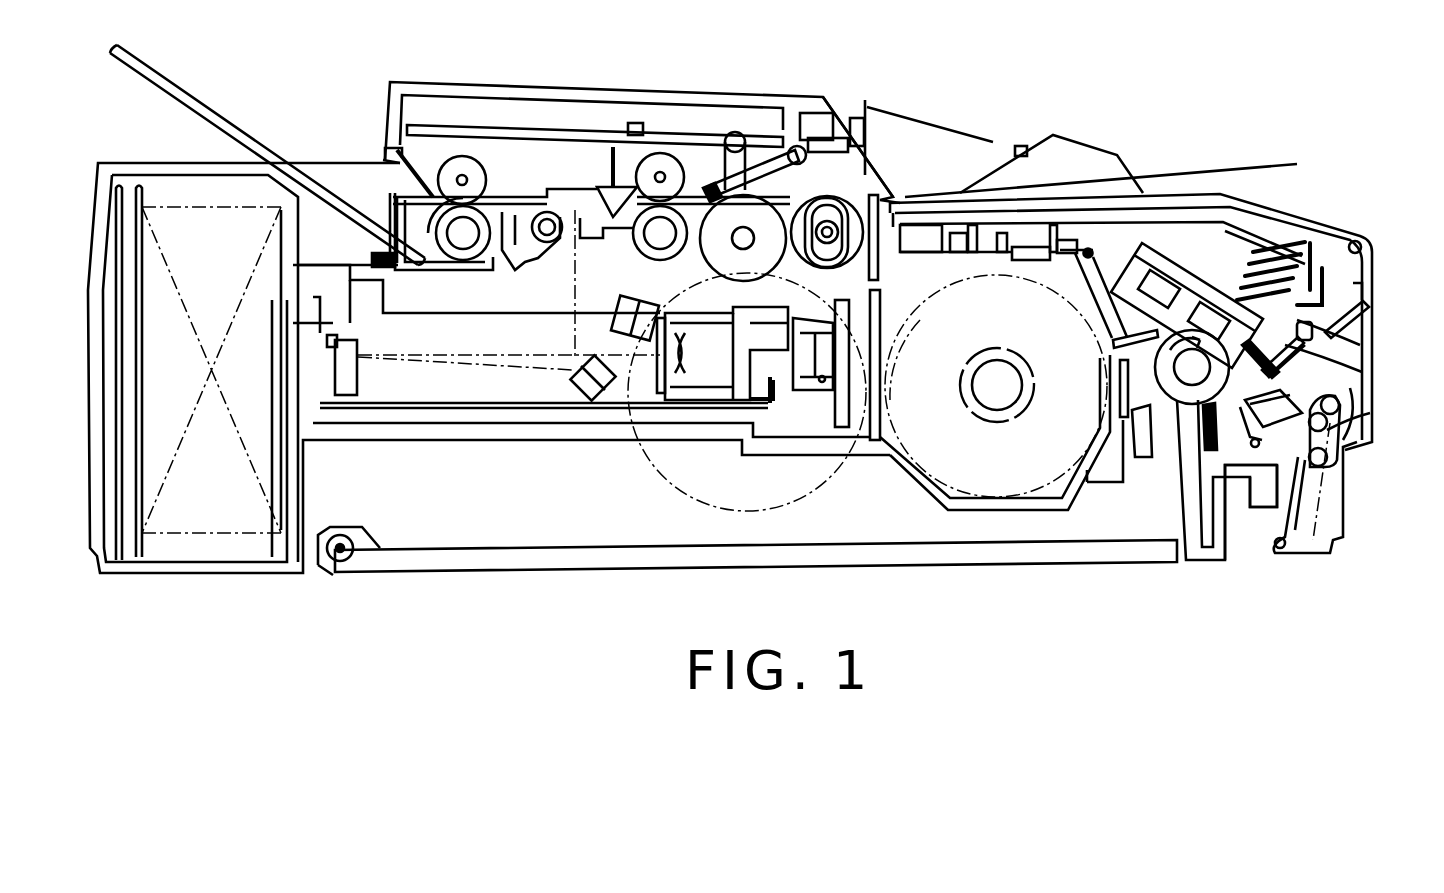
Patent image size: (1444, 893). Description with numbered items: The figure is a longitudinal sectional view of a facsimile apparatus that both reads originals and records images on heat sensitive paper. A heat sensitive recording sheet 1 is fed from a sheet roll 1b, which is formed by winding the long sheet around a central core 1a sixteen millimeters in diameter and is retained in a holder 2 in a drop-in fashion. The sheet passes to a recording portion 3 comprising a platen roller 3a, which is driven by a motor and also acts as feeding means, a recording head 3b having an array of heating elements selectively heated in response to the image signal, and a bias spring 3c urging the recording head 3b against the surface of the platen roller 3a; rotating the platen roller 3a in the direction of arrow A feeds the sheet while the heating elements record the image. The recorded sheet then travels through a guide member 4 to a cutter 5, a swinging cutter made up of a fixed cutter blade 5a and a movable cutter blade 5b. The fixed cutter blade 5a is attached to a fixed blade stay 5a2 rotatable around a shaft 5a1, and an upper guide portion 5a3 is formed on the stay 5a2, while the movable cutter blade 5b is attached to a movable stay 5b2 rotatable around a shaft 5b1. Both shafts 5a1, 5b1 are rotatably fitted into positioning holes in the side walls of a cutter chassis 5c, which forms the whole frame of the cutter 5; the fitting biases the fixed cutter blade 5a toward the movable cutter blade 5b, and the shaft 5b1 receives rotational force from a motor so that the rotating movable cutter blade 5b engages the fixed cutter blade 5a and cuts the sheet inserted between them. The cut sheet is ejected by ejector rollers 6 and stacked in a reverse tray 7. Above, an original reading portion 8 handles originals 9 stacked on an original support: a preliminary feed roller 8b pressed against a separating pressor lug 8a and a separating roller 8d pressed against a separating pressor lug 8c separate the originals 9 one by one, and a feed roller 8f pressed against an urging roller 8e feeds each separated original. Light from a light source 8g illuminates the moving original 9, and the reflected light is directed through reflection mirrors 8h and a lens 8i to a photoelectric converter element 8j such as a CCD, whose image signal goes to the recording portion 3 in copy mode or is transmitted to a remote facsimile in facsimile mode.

The heat sensitive recording sheet 1 is at (1093, 312).
The central core 1a is at (1012, 407).
The sheet roll 1b is at (930, 333).
The holder 2 is at (912, 480).
The recording portion 3 is at (1235, 256).
The platen roller 3a is at (1183, 385).
The recording head 3b is at (1215, 292).
The bias spring 3c is at (1273, 280).
The guide member 4 is at (1193, 407).
The cutter 5 is at (1345, 343).
The fixed cutter blade 5a is at (1305, 365).
The shaft 5a1 is at (1365, 312).
The fixed blade stay 5a2 is at (1312, 345).
The upper guide portion 5a3 is at (1340, 395).
The movable cutter blade 5b is at (1330, 440).
The shaft 5b1 is at (1322, 468).
The movable stay 5b2 is at (1253, 447).
The cutter chassis 5c is at (1243, 470).
The ejector rollers 6 is at (1357, 430).
The reverse tray 7 is at (1340, 520).
The original reading portion 8 is at (562, 128).
The separating pressor lug 8a is at (900, 203).
The preliminary feed roller 8b is at (830, 247).
The separating pressor lug 8c is at (713, 187).
The separating roller 8d is at (718, 257).
The urging roller 8e is at (463, 172).
The feed roller 8f is at (460, 257).
The light source 8g is at (546, 245).
The reflection mirrors 8h is at (347, 378).
The lens 8i is at (692, 375).
The photoelectric converter element 8j is at (822, 382).
The originals 9 is at (1247, 167).